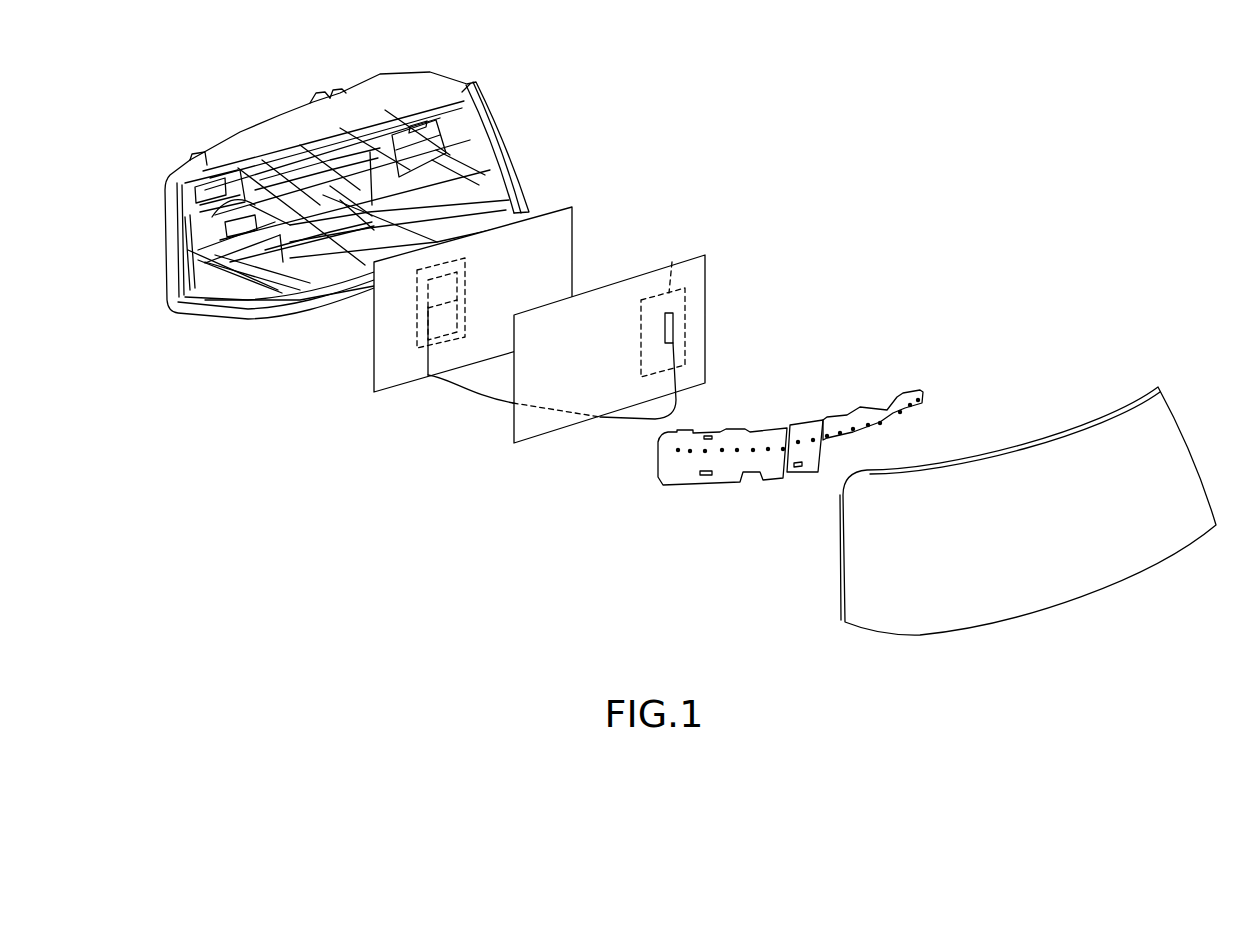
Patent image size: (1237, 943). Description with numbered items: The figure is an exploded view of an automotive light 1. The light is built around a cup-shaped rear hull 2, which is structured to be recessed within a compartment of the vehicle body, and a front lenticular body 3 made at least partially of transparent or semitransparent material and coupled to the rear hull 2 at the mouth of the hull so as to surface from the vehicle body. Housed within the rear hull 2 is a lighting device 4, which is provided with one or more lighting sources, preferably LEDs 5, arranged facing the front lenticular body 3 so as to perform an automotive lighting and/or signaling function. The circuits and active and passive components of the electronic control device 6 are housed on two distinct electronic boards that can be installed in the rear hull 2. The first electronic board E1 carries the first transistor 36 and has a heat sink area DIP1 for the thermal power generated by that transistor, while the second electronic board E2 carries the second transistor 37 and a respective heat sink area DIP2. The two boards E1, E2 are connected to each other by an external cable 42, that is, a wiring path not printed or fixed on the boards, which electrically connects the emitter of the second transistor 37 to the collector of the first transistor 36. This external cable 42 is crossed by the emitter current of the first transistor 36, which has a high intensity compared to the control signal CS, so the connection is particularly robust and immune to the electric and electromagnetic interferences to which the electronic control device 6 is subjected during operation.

The automotive light 1 is at (443, 525).
The cup-shaped rear hull 2 is at (485, 95).
The front lenticular body 3 is at (1167, 422).
The lighting device 4 is at (579, 305).
The LEDs 5 is at (690, 454).
The electronic control device 6 is at (660, 297).
The first transistor 36 is at (670, 305).
The second transistor 37 is at (420, 307).
The external cable/wire/wiring harness/electrical path 42 is at (475, 397).
The control signal CS is at (633, 326).
The heat sink area DIP1 is at (672, 262).
The heat sink area DIP2 is at (426, 310).
The first electronic board E1 is at (660, 321).
The second electronic board E2 is at (423, 331).